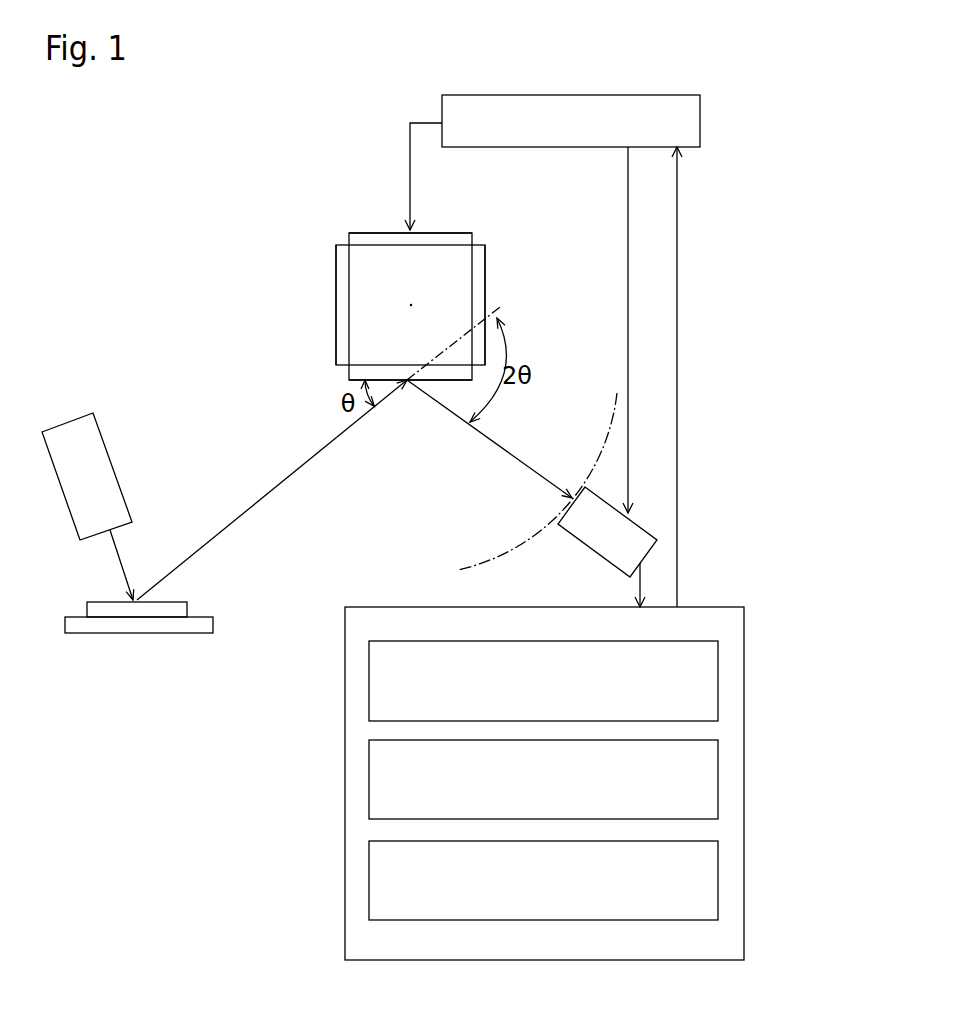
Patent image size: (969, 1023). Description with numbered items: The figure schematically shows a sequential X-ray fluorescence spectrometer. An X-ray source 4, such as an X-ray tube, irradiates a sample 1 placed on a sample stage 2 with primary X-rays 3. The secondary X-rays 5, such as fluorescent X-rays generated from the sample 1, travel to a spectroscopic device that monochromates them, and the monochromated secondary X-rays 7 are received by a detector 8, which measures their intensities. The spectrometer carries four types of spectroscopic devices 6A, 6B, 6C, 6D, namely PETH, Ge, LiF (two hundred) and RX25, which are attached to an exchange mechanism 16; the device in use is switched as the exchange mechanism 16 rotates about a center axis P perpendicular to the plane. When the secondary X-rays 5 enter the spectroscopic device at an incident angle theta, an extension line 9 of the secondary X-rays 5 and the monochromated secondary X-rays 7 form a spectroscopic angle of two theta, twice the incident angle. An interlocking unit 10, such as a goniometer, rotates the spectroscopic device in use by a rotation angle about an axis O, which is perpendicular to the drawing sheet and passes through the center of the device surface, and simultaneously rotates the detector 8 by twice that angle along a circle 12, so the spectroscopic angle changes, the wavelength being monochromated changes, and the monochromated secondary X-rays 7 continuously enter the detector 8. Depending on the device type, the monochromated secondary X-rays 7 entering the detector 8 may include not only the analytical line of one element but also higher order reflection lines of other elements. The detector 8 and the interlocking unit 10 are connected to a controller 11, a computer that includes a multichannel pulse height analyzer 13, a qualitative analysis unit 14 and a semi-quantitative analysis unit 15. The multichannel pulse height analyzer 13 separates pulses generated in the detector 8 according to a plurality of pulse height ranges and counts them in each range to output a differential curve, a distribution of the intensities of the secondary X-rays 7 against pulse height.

The sample 1 is at (190, 610).
The sample stage 2 is at (215, 622).
The primary X-rays 3 is at (118, 553).
The X-ray source 4 is at (113, 467).
The secondary X-rays 5 is at (287, 480).
The spectroscopic device 6A is at (350, 373).
The spectroscopic device 6B is at (335, 258).
The spectroscopic device 6C is at (377, 232).
The spectroscopic device 6D is at (485, 255).
The monochromated secondary X-rays 7 is at (507, 448).
The detector 8 is at (593, 550).
The extension line 9 is at (493, 310).
The interlocking unit 10 is at (545, 147).
The controller 11 is at (745, 685).
The circle 12 is at (523, 542).
The multichannel pulse height analyzer 13 is at (369, 682).
The qualitative analysis unit 14 is at (369, 782).
The semi-quantitative analysis unit 15 is at (369, 878).
The exchange mechanism 16 is at (333, 287).
The center axis P is at (410, 305).
The axis O is at (403, 383).